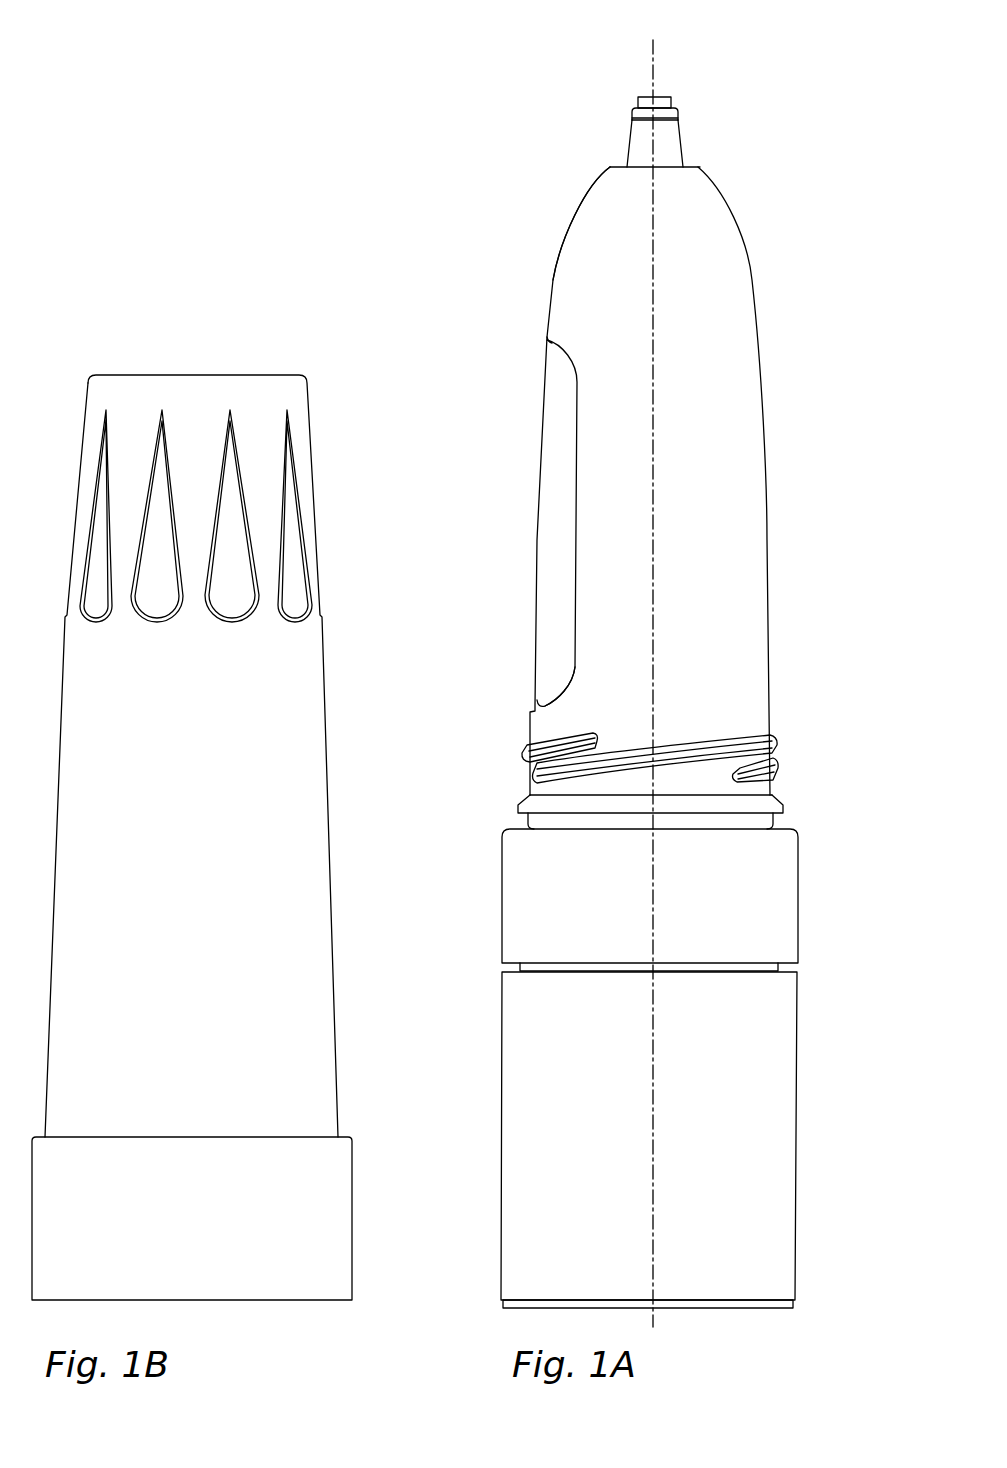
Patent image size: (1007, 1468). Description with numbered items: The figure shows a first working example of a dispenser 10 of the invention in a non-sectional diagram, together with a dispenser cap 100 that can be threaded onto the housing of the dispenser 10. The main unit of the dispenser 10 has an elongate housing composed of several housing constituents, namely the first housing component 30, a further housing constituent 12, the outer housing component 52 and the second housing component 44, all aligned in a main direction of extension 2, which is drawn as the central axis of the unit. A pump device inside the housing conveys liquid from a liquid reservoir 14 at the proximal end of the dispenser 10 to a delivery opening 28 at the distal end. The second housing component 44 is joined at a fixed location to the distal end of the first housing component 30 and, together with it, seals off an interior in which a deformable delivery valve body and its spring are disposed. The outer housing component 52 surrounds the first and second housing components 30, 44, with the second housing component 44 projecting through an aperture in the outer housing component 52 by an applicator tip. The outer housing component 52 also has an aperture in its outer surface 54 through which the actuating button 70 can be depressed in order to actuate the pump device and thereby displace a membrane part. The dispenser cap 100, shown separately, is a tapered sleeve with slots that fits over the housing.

In FIG. 1A, the main direction of extension 2 is at (653, 50).
In FIG. 1A, the dispenser 10 is at (542, 246).
In FIG. 1A, the housing constituent 12 is at (769, 1310).
In FIG. 1A, the liquid reservoir 14 is at (608, 1108).
In FIG. 1A, the delivery opening 28 is at (654, 98).
In FIG. 1A, the first housing component 30 is at (754, 1233).
In FIG. 1A, the second housing component 44 is at (662, 129).
In FIG. 1A, the outer housing component 52 is at (576, 219).
In FIG. 1A, the outer surface 54 is at (578, 665).
In FIG. 1A, the actuating button 70 is at (521, 608).
In FIG. 1B, the dispenser cap 100 is at (324, 442).